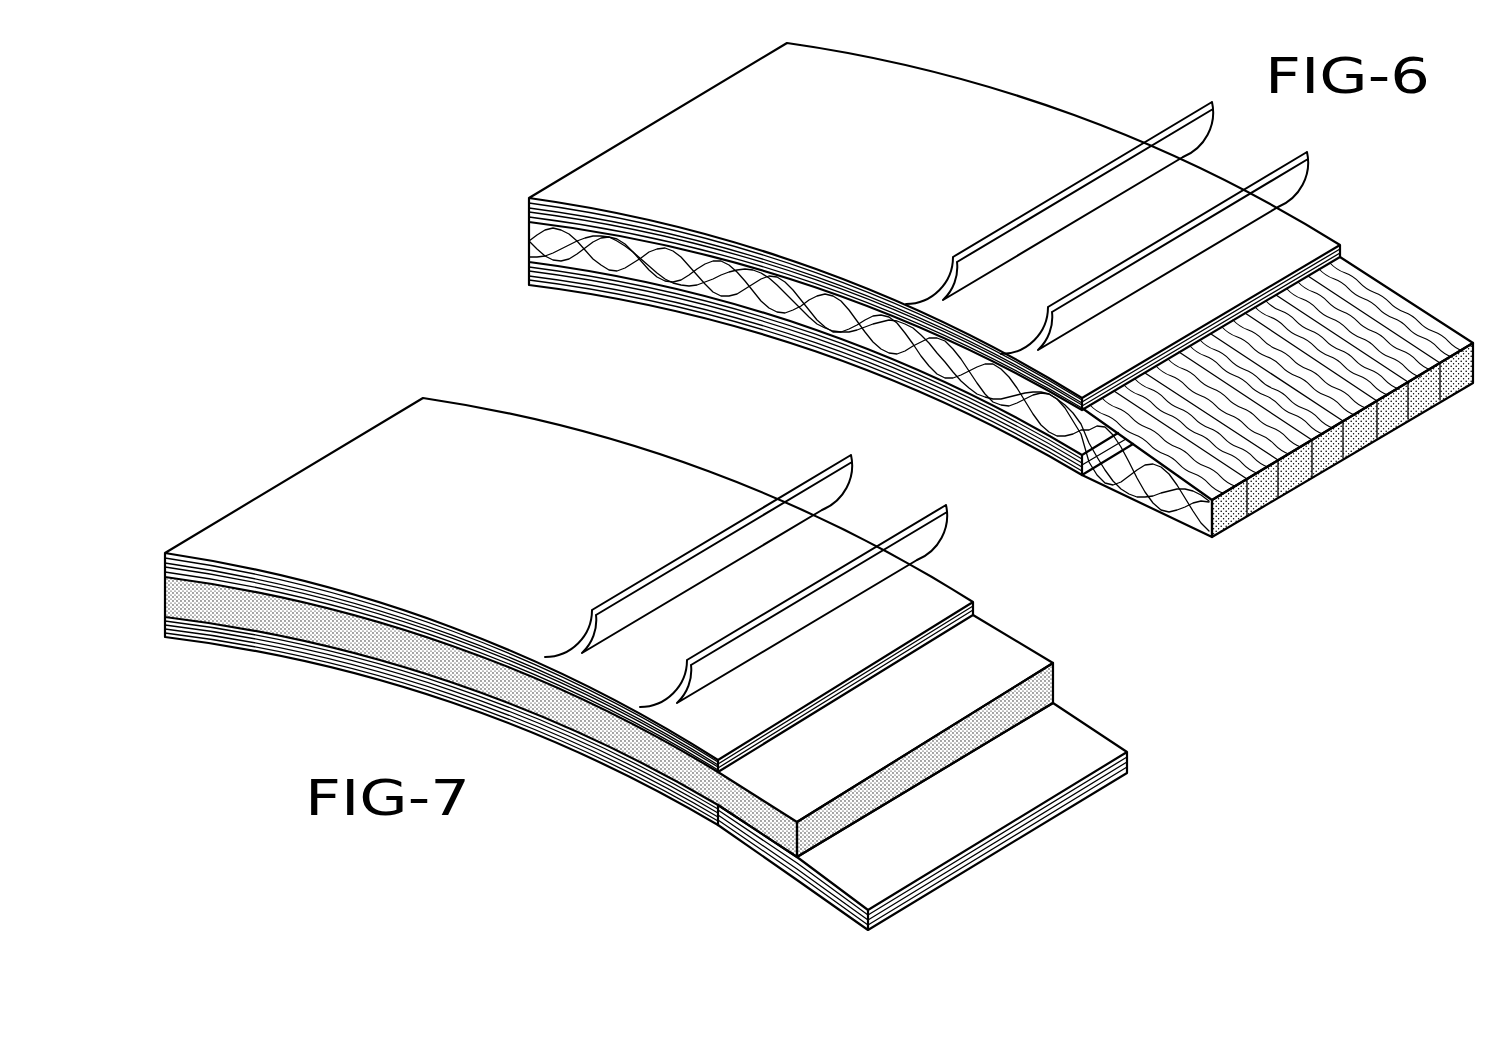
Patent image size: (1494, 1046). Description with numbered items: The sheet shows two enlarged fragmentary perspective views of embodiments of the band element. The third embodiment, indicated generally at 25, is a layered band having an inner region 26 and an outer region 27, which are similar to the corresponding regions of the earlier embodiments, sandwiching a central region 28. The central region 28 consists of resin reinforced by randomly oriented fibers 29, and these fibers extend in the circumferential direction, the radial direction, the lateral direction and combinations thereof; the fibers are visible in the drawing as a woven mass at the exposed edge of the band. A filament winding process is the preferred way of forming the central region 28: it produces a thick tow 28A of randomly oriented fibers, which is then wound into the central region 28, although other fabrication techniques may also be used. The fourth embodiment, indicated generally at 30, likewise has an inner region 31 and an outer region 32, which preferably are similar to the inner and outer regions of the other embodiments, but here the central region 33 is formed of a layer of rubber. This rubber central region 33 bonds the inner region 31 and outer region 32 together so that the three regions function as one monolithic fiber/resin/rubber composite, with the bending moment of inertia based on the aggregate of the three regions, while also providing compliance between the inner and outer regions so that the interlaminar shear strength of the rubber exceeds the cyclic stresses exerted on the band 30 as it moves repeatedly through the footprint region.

In FIG. 6, the band element (third embodiment) 25 is at (1001, 306).
In FIG. 6, the inner region 26 is at (681, 313).
In FIG. 6, the outer region 27 is at (706, 128).
In FIG. 6, the central region 28 is at (1168, 518).
In FIG. 6, the thick tow 28A is at (1362, 452).
In FIG. 6, the randomly oriented fibers 29 is at (1155, 490).
In FIG. 7, the band element (fourth embodiment) 30 is at (1029, 870).
In FIG. 7, the inner region 31 is at (320, 668).
In FIG. 7, the outer region 32 is at (363, 480).
In FIG. 7, the central region 33 is at (1036, 640).